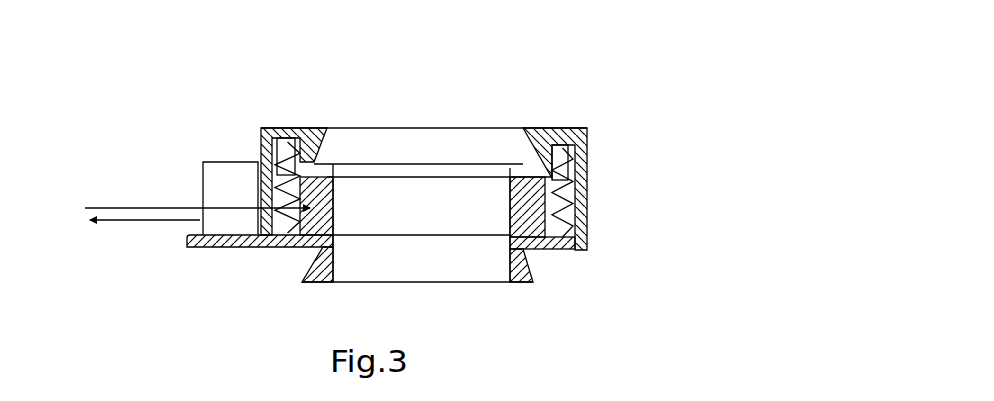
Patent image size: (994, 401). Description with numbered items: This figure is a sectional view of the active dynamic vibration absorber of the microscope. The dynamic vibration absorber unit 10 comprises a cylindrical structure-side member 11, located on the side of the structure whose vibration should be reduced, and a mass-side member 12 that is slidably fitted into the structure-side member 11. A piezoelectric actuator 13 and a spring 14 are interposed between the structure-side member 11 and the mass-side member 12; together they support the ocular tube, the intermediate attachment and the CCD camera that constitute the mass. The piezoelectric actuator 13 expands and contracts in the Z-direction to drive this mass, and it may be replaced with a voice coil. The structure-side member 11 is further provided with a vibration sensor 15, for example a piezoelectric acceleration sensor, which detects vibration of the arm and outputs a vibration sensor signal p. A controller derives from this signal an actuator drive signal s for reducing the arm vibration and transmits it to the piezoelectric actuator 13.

The dynamic vibration absorber unit 10 is at (522, 118).
The structure-side member 11 is at (562, 248).
The mass-side member 12 is at (312, 128).
The piezoelectric actuator 13 is at (316, 230).
The spring 14 is at (280, 150).
The vibration sensor 15 is at (237, 168).